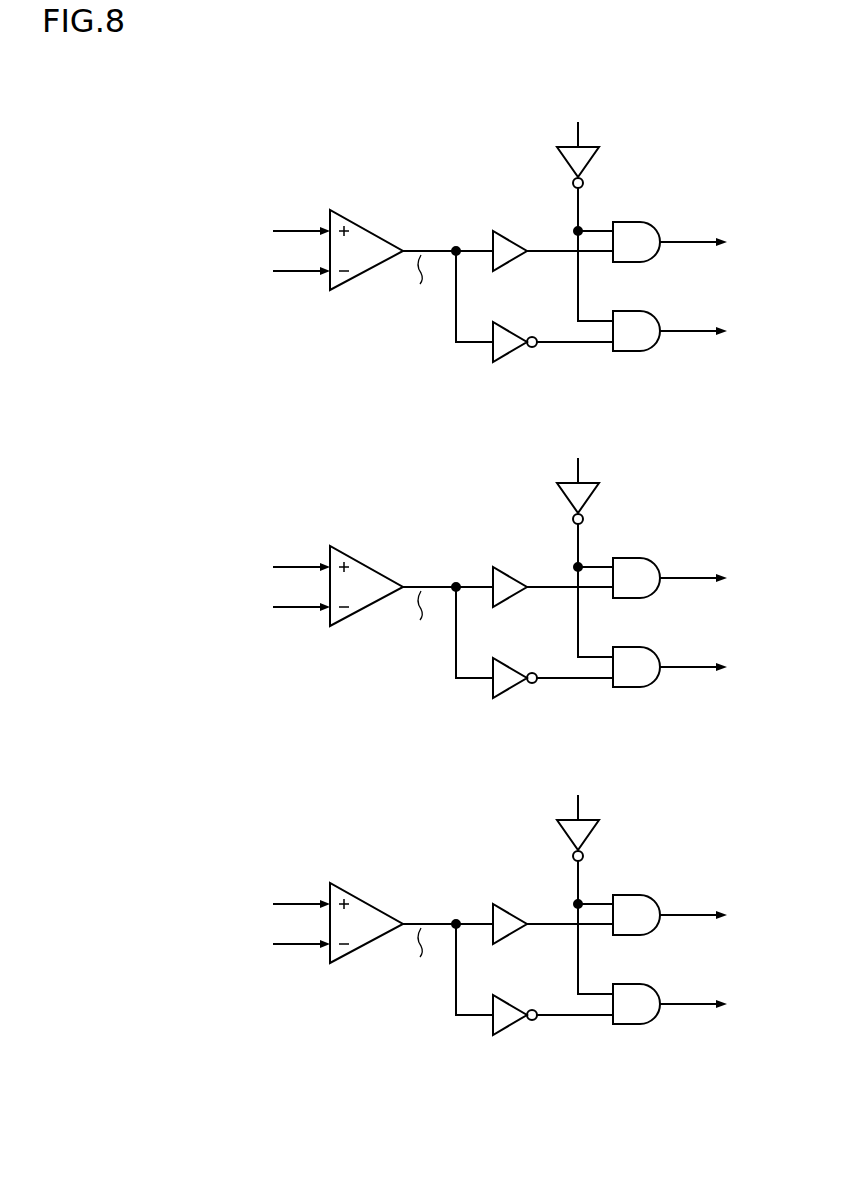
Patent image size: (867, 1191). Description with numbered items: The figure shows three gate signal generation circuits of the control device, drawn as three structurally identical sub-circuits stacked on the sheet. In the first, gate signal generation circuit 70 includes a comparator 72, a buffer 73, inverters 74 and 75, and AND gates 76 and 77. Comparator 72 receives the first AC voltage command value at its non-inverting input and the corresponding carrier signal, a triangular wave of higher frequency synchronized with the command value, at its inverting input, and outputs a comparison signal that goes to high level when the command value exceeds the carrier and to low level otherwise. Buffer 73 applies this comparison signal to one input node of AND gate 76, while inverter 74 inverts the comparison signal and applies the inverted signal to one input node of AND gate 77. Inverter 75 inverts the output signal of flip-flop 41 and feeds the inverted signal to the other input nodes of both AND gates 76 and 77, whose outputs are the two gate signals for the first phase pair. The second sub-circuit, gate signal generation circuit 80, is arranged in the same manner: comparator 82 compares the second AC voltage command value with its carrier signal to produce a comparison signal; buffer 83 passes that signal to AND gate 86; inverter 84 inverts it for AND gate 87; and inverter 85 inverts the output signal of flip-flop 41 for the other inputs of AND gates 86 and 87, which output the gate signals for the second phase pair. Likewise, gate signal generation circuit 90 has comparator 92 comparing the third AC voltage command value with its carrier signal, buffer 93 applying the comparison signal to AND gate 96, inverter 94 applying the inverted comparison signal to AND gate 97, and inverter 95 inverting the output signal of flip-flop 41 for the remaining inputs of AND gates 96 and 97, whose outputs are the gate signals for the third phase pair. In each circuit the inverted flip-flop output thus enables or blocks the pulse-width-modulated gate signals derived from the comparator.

The gate signal generation circuit 70 is at (229, 115).
The comparator 72 is at (372, 234).
The buffer 73 is at (510, 237).
The inverter 74 is at (510, 329).
The inverter 75 is at (592, 164).
The AND gate 76 is at (632, 219).
The AND gate 77 is at (632, 309).
The flip-flop 41 is at (578, 459).
The gate signal generation circuit 80 is at (434, 540).
The comparator 82 is at (387, 594).
The buffer 83 is at (553, 578).
The inverter 84 is at (553, 670).
The inverter 85 is at (603, 503).
The AND gate 86 is at (692, 565).
The AND gate 87 is at (693, 654).
The gate signal generation circuit 90 is at (434, 877).
The comparator 92 is at (387, 931).
The buffer 93 is at (553, 915).
The inverter 94 is at (553, 1007).
The inverter 95 is at (603, 840).
The AND gate 96 is at (693, 902).
The AND gate 97 is at (693, 991).